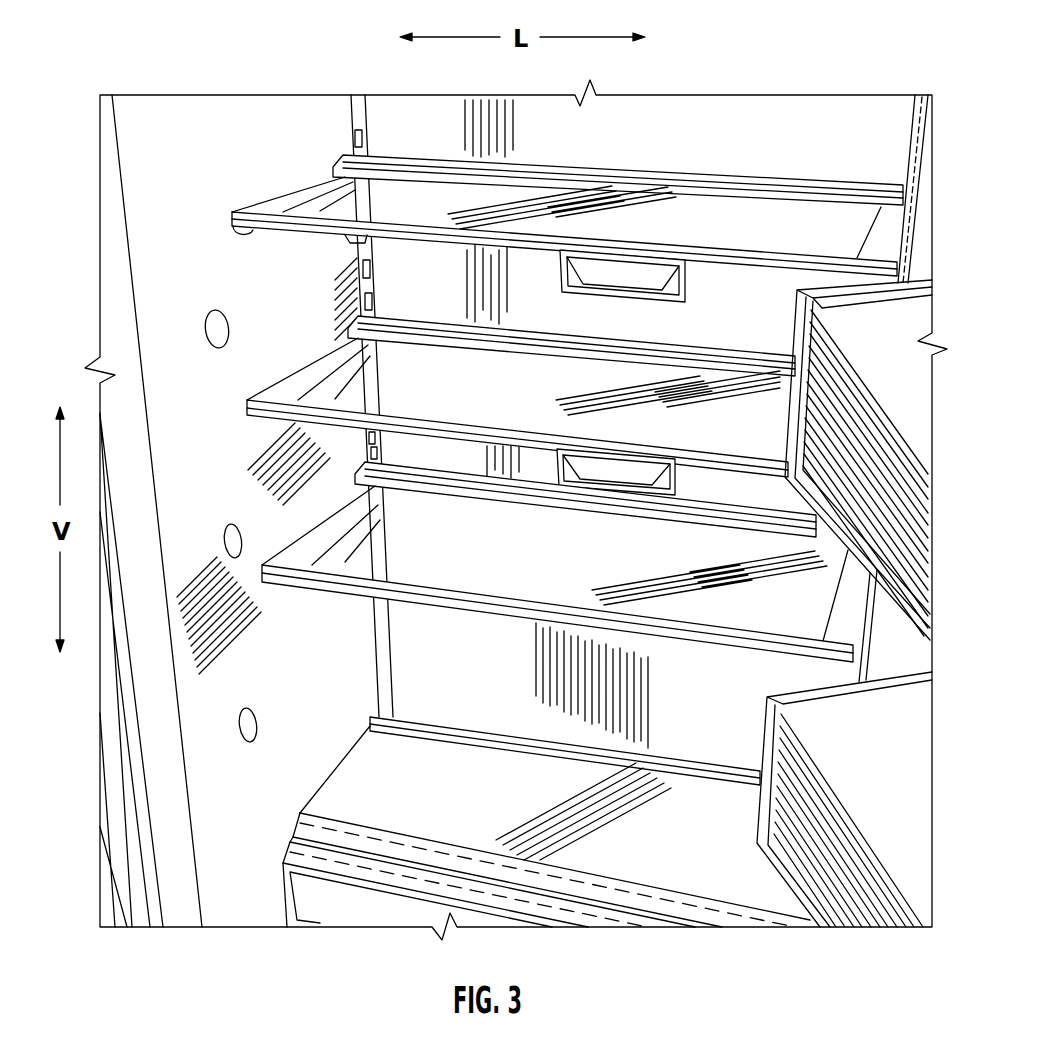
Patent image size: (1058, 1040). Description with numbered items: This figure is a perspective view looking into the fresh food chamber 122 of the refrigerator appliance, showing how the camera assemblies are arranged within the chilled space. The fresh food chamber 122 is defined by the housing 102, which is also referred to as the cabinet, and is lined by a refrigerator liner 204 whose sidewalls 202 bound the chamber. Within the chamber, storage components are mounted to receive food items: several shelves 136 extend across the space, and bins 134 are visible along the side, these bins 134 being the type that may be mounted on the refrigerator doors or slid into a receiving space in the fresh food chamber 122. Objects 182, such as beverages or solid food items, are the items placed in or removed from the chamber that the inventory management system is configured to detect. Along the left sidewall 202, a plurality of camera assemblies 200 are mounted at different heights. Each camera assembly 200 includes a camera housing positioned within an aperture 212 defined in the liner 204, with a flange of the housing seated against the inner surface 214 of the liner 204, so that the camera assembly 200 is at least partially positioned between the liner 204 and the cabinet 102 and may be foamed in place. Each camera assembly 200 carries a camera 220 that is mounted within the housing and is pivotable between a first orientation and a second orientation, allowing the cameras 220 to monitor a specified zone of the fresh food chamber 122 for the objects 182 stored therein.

The housing 102 is at (98, 811).
The fresh food chamber 122 is at (828, 116).
The bins 134 is at (372, 897).
The shelves 136 is at (623, 247).
The objects 182 is at (201, 357).
The camera assembly 200 is at (180, 539).
The sidewalls 202 is at (160, 132).
The refrigerator liner 204 is at (126, 170).
The aperture 212 is at (206, 553).
The inner surface 214 is at (291, 125).
The camera 220 is at (228, 328).